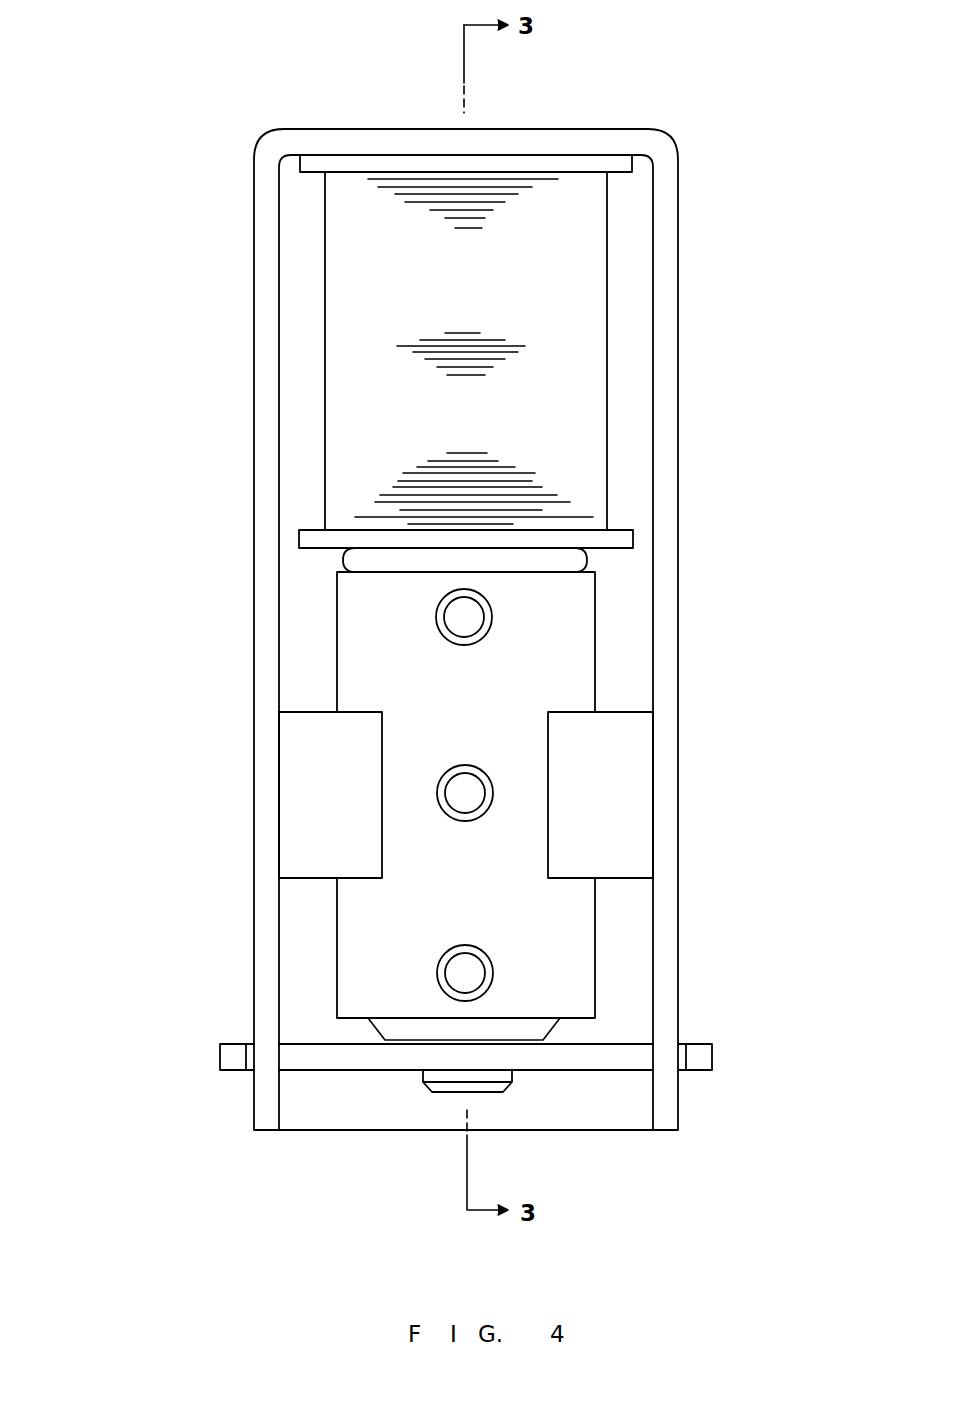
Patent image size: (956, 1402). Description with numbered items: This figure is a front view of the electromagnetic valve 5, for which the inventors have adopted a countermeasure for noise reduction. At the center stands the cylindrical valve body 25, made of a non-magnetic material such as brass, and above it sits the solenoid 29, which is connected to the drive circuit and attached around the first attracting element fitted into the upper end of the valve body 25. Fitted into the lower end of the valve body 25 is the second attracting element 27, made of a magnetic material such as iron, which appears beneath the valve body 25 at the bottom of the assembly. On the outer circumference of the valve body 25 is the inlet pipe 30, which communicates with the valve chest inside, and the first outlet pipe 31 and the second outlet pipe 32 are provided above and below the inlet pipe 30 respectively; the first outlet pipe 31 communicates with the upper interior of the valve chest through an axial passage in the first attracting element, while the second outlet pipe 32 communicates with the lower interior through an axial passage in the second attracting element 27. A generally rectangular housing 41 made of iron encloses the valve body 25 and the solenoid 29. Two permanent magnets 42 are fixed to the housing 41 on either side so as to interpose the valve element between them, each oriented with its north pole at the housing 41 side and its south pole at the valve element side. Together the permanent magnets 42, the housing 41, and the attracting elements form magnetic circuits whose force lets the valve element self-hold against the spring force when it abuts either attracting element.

The electromagnetic valve 5 is at (343, 118).
The valve body 25 is at (337, 645).
The second attracting element 27 is at (423, 1073).
The solenoid 29 is at (607, 444).
The inlet pipe 30 is at (493, 790).
The first outlet pipe 31 is at (493, 617).
The second outlet pipe 32 is at (498, 980).
The housing 41 is at (678, 265).
The permanent magnets 42 is at (313, 880).